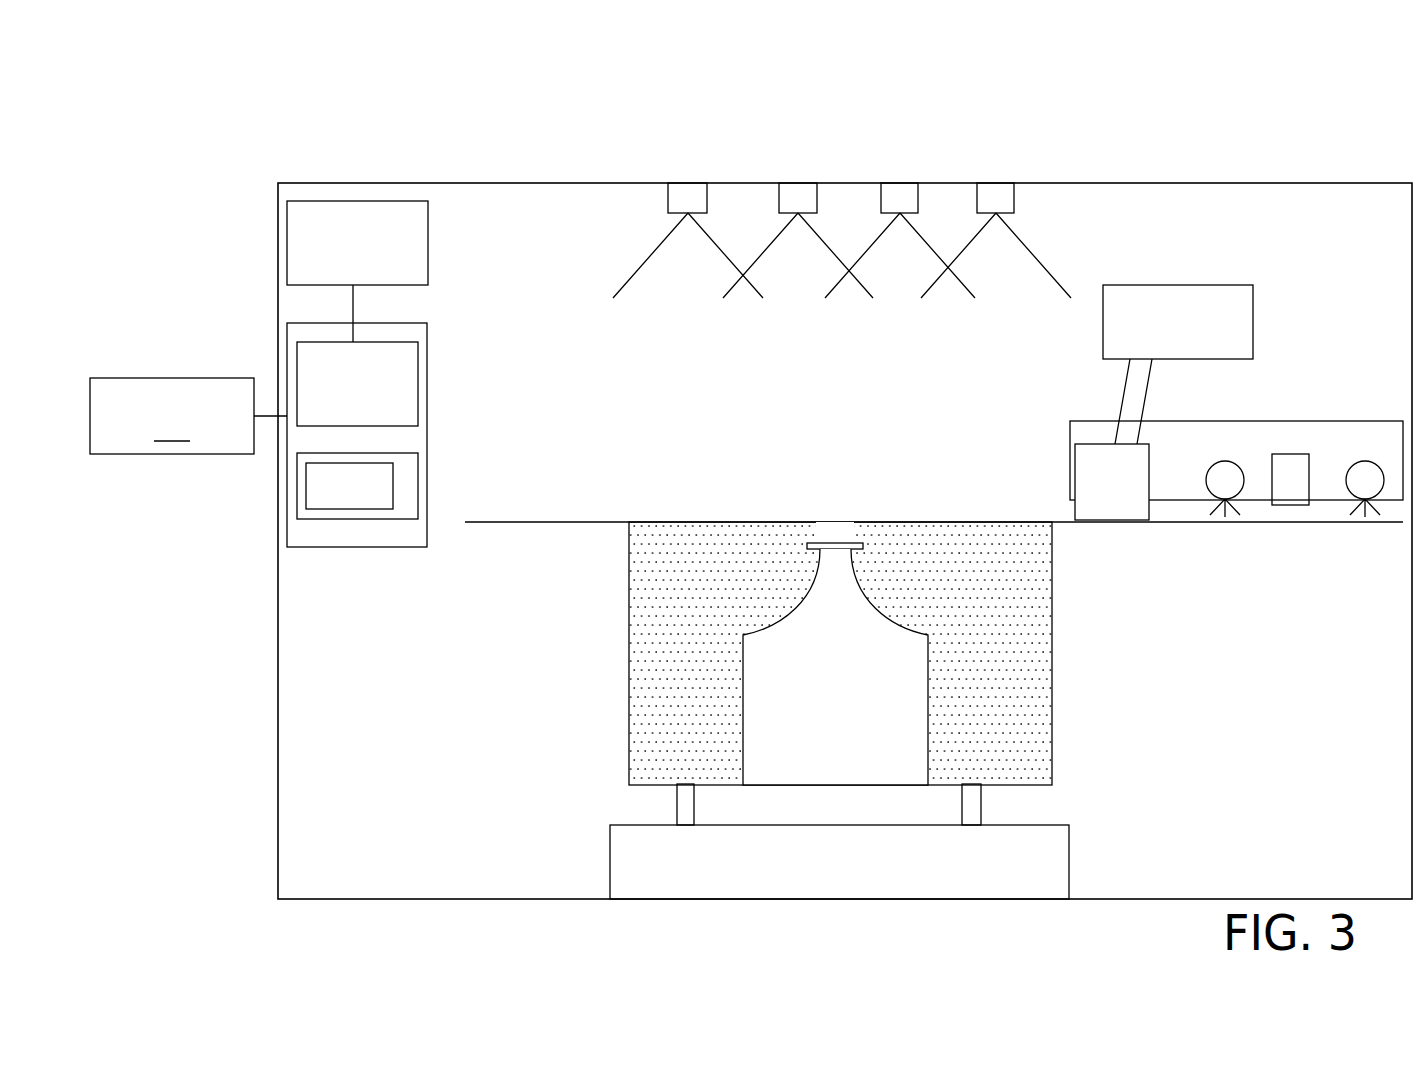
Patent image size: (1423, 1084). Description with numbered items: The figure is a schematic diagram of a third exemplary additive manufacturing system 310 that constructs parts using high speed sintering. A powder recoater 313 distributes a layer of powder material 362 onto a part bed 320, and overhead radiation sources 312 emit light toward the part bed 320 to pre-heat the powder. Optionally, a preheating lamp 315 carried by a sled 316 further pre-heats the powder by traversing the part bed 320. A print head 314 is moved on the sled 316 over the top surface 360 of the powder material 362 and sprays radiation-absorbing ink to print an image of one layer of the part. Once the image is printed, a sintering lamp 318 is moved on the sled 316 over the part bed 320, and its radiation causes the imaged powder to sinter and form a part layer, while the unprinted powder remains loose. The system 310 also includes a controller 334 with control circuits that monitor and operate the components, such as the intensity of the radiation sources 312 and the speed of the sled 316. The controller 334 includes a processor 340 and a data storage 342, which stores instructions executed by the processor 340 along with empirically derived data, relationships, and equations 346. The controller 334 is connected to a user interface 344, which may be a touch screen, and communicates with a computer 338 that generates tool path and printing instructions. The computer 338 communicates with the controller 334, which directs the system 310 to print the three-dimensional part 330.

The additive manufacturing system 310 is at (510, 142).
The overhead radiation sources 312 is at (677, 195).
The powder recoater 313 is at (1093, 492).
The print head 314 is at (1300, 458).
The preheating lamp 315 is at (1220, 478).
The sled 316 is at (1070, 421).
The sintering lamp 318 is at (1365, 478).
The part bed 320 is at (629, 778).
The 3D part 330 is at (822, 530).
The controller 334 is at (400, 537).
The computer 338 is at (188, 416).
The processor 340 is at (399, 407).
The data storage 342 is at (418, 482).
The user interface 344 is at (418, 237).
The empirically derived data, relationships, and equations 346 is at (361, 502).
The top surface 360 is at (639, 510).
The powder material 362 is at (1150, 326).